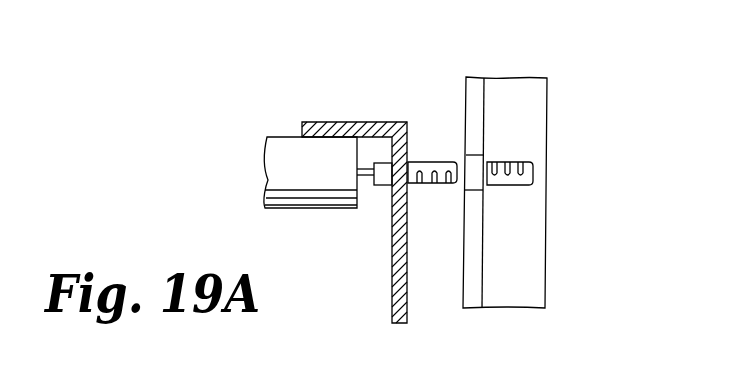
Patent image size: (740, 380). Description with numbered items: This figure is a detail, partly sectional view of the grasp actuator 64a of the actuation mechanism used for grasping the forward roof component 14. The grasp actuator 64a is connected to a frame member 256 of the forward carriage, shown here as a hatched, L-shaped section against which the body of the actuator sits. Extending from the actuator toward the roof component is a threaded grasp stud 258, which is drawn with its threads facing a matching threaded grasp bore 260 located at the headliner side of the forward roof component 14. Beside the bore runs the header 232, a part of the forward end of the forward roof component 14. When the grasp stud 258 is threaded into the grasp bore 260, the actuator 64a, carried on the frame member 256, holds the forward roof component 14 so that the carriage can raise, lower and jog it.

The forward roof component 14 is at (550, 118).
The grasp actuator 64a is at (302, 209).
The header 232 is at (466, 88).
The frame member 256 is at (373, 122).
The threaded grasp stud 258 is at (430, 162).
The threaded grasp bore 260 is at (510, 186).